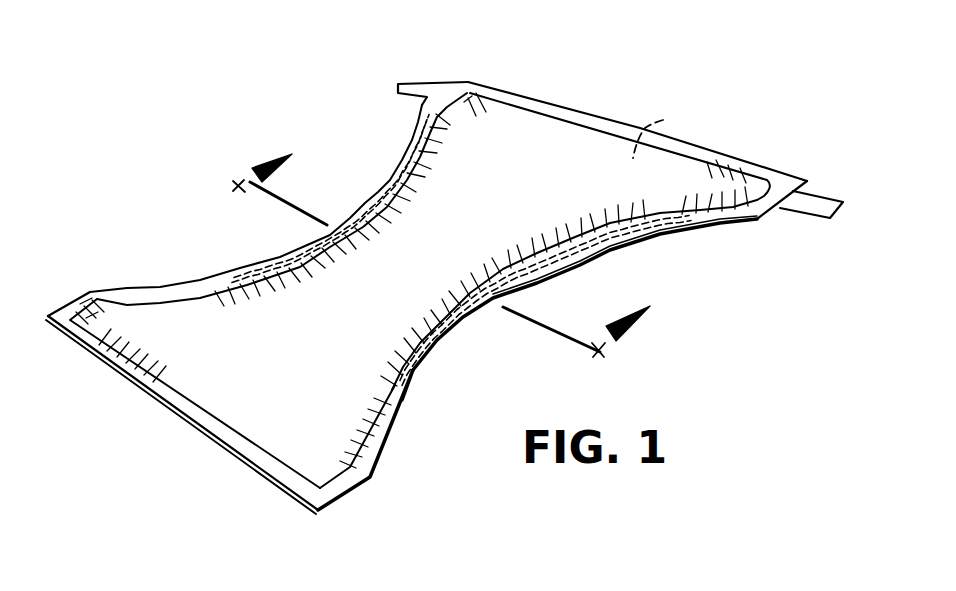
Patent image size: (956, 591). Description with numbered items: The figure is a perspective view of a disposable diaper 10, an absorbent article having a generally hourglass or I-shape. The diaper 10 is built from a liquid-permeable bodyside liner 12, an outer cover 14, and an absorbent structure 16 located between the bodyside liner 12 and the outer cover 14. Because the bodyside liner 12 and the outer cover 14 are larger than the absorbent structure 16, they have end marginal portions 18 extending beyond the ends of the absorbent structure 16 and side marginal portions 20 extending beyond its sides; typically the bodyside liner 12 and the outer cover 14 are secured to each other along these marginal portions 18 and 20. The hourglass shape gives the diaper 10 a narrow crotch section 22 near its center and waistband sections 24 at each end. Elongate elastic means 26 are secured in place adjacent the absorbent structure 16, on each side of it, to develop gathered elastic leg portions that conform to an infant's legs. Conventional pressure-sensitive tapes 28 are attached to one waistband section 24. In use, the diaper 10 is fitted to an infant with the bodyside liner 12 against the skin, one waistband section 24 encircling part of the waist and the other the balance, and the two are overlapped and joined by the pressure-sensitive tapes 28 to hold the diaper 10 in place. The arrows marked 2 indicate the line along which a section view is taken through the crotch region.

The disposable diaper 10 is at (645, 82).
The liquid-permeable bodyside liner 12 is at (371, 392).
The outer cover 14 is at (718, 226).
The absorbent structure 16 is at (663, 120).
The end marginal portions 18 is at (532, 100).
The side marginal portions 20 is at (200, 279).
The narrow crotch section 22 is at (550, 280).
The waistband sections 24 is at (725, 154).
The elongate elastic means 26 is at (390, 202).
The pressure-sensitive tapes 28 is at (417, 82).
The section line 2- 2 is at (426, 270).